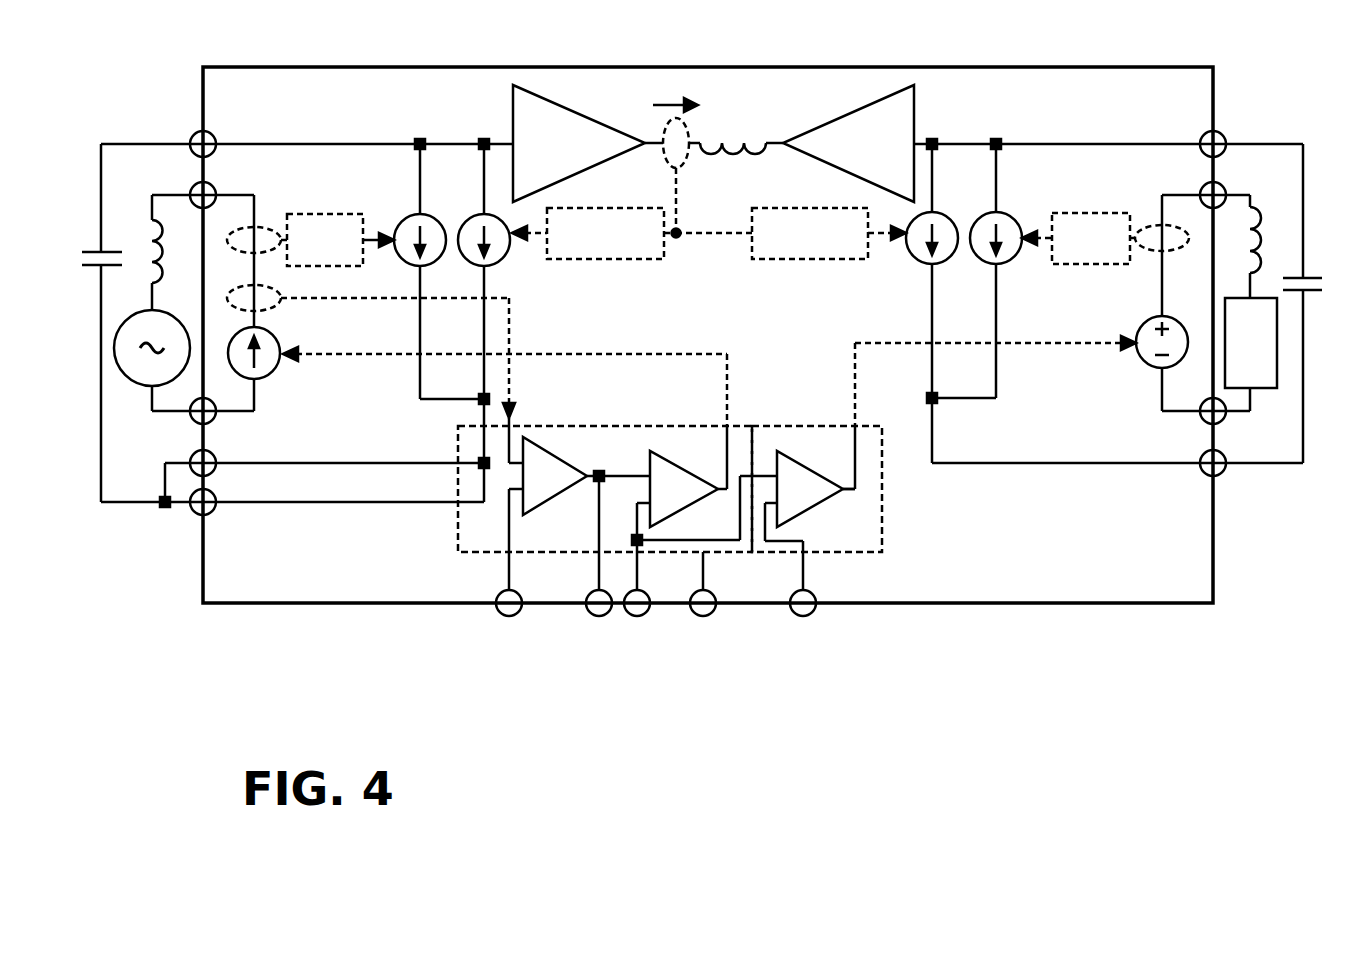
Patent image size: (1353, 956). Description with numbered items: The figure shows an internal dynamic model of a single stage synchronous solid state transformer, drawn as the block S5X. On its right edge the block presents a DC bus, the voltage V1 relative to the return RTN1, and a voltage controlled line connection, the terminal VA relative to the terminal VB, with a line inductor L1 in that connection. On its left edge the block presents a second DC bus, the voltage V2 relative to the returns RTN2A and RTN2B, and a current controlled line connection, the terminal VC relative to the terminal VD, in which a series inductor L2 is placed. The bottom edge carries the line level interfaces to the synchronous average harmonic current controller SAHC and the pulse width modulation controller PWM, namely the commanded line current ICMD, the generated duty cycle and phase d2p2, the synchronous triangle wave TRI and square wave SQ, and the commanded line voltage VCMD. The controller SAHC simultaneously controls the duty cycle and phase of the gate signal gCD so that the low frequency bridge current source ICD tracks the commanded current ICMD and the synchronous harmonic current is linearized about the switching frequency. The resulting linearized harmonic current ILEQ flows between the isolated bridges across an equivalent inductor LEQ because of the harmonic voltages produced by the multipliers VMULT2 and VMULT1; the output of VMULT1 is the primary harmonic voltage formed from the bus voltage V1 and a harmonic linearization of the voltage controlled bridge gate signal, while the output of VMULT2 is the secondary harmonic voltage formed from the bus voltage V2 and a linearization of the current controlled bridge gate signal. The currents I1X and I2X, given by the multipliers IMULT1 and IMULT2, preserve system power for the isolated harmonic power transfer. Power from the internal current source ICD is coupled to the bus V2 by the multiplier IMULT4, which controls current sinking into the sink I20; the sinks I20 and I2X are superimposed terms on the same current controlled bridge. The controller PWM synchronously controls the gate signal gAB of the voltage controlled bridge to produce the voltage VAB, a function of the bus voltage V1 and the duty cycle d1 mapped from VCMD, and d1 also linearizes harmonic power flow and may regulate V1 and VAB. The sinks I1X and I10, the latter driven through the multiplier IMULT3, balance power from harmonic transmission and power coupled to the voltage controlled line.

The single stage synchronous solid state transformer detail block S5X is at (708, 335).
The secondary DC bus voltage V2 is at (222, 134).
The current controlled line connection terminal VC is at (203, 185).
The current controlled line return terminal VD is at (206, 421).
The secondary DC bus return RTN2A is at (327, 476).
The secondary DC bus return RTN2B is at (292, 514).
The series inductor L2 is at (152, 287).
The low frequency bridge current source ICD is at (273, 303).
The current controlled bridge gate signal gCD is at (505, 374).
The current multiplier coupling ICD power to V2 IMULT4 is at (333, 224).
The current sink I20 is at (433, 274).
The harmonic power current sink I2X is at (475, 323).
The secondary harmonic voltage multiplier VMULT2 is at (588, 139).
The linearized harmonic current ILEQ is at (702, 131).
The equivalent inductor LEQ is at (736, 167).
The primary harmonic voltage multiplier VMULT1 is at (848, 139).
The secondary current multiplier IMULT2 is at (596, 229).
The primary current multiplier IMULT1 is at (791, 249).
The harmonic power current sink I1X is at (917, 303).
The current sink I10 is at (990, 271).
The current multiplier for voltage controlled bridge IMULT3 is at (1105, 223).
The primary DC bus voltage V1 is at (1190, 134).
The voltage controlled line connection terminal VA is at (1200, 186).
The voltage controlled line return terminal VB is at (1206, 421).
The primary DC bus return RTN1 is at (1117, 479).
The voltage controlled bridge line voltage VAB is at (1145, 303).
The voltage controlled bridge gate signal gAB is at (995, 368).
The line inductor L1 is at (1251, 288).
The synchronous average harmonic current controller SAHC is at (605, 485).
The pulse width modulation controller PWM is at (759, 489).
The voltage controlled bridge duty cycle d1 is at (833, 518).
The commanded line current ICMD is at (480, 552).
The generated duty cycle and phase d2p2 is at (573, 546).
The synchronous triangle wave TRI is at (651, 559).
The synchronous square wave SQ is at (716, 584).
The commanded line voltage VCMD is at (820, 559).